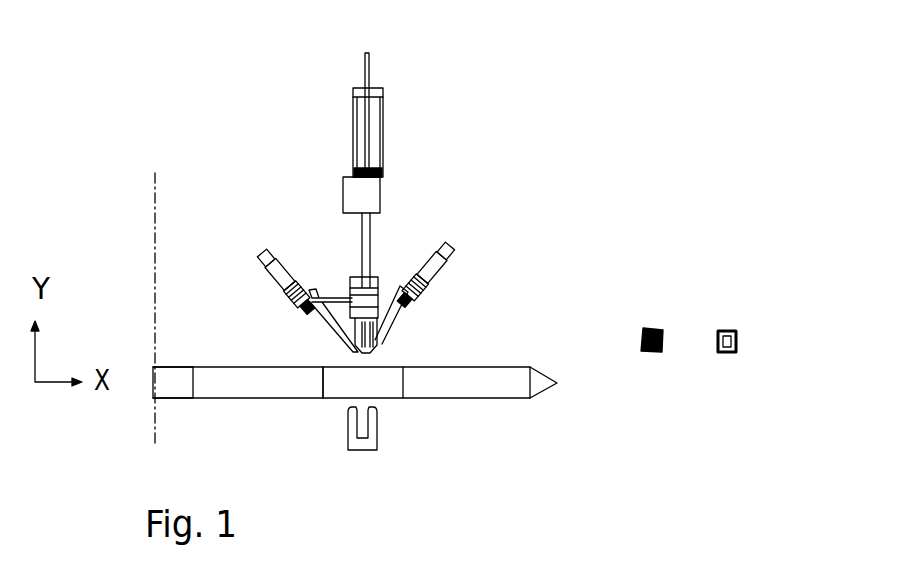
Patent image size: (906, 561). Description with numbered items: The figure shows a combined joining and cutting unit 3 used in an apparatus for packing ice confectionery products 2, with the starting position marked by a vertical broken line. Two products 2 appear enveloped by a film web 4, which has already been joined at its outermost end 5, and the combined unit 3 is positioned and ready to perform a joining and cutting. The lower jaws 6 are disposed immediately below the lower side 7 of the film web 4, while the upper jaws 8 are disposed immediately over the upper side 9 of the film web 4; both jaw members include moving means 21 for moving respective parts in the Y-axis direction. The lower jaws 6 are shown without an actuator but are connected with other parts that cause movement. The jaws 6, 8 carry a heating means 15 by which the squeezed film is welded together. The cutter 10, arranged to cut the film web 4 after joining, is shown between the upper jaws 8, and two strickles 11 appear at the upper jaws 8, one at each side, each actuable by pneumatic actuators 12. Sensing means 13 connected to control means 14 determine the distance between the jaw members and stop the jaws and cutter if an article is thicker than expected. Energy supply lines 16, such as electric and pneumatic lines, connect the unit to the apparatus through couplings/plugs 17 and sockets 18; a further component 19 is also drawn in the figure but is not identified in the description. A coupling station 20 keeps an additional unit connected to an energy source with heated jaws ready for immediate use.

The products 2 is at (230, 386).
The combined unit 3 is at (270, 112).
The film web 4 is at (174, 367).
The outermost end 5 is at (557, 385).
The lower jaw member 6 is at (426, 456).
The lower side 7 is at (332, 398).
The upper jaw member 8 is at (474, 321).
The upper side 9 is at (508, 369).
The cutter 10 is at (383, 298).
The strickles 11 is at (390, 330).
The pneumatic actuators 12 is at (407, 293).
The sensing means 13 is at (380, 336).
The control means 14 is at (653, 328).
The heating means 15 is at (374, 423).
The energy supply lines 16 is at (370, 60).
The couplings/plugs 17 is at (415, 132).
The sockets 18 is at (370, 168).
The drive box 19 is at (347, 198).
The coupling station 20 is at (723, 330).
The moving means 21 is at (373, 184).